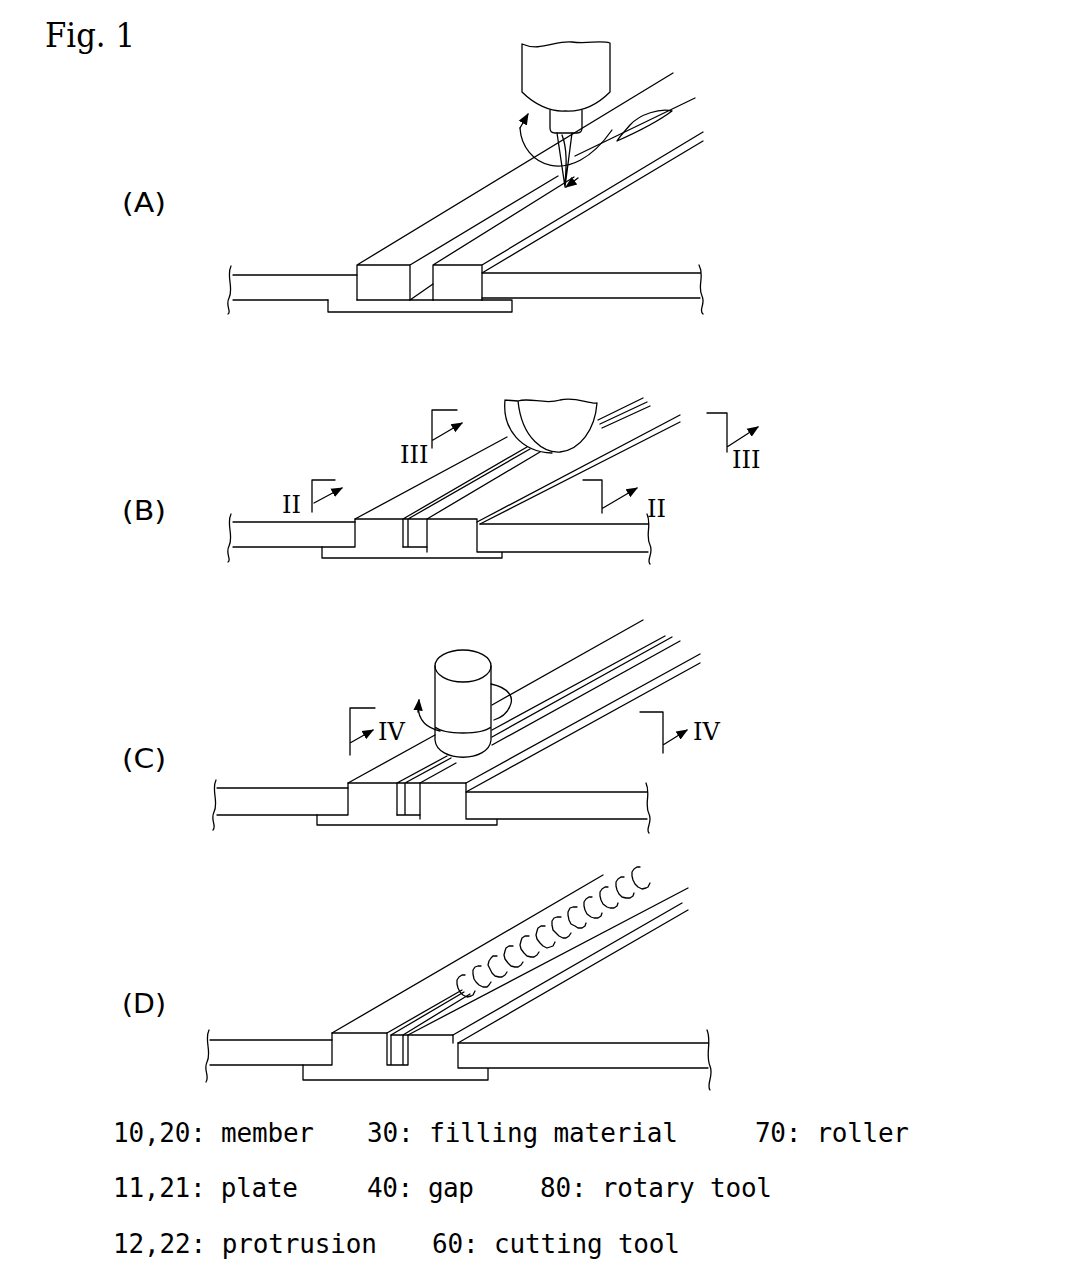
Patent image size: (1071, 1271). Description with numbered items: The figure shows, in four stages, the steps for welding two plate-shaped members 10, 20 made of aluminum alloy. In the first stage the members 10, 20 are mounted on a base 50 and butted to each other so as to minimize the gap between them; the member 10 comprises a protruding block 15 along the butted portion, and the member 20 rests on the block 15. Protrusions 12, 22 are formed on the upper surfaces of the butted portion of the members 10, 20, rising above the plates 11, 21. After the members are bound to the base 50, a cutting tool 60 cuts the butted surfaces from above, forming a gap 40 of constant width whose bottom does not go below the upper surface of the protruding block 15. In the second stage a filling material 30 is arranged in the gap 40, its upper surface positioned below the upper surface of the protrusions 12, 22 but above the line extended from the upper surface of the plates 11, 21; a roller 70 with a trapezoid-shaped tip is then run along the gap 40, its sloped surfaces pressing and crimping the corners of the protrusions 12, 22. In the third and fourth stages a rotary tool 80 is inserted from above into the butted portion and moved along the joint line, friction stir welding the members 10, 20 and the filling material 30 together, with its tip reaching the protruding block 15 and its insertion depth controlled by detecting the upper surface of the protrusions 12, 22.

The member 10 is at (450, 410).
The plate 11 is at (327, 233).
The protrusion 12 is at (413, 247).
The protruding block 15 is at (425, 313).
The member 20 is at (591, 440).
The plate 21 is at (612, 256).
The protrusion 22 is at (533, 223).
The filling material 30 is at (413, 548).
The gap 40 is at (463, 234).
The base 50 is at (362, 314).
The cutting tool 60 is at (545, 68).
The roller 70 is at (557, 425).
The rotary tool 80 is at (440, 686).